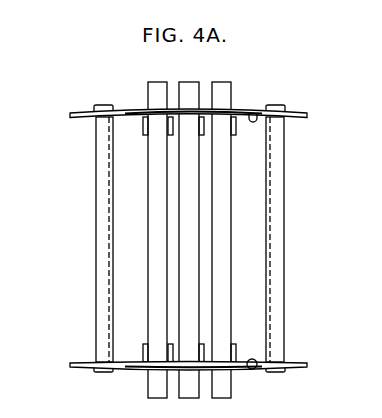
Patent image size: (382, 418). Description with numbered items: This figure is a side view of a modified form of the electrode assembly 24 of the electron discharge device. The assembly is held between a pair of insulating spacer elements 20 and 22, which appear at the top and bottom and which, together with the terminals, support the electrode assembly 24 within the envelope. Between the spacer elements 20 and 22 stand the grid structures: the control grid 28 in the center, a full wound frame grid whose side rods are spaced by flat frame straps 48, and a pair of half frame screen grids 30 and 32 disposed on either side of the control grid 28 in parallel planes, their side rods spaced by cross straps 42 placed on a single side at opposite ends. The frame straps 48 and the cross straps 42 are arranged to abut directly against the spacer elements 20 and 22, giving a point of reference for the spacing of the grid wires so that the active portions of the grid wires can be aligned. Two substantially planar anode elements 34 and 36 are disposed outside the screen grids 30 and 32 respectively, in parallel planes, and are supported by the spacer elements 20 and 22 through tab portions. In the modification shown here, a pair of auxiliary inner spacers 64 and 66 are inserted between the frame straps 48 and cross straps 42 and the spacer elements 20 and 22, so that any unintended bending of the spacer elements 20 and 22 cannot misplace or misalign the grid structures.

The insulating spacer element 20 is at (303, 112).
The insulating spacer element 22 is at (294, 365).
The electrode assembly 24 is at (79, 143).
The control grid 28 is at (200, 71).
The screen grid 30 is at (152, 82).
The screen grid 32 is at (246, 71).
The anode element 34 is at (96, 233).
The anode element 36 is at (285, 206).
The cross strap 42 is at (236, 135).
The frame strap 48 is at (170, 135).
The auxiliary inner spacer 64 is at (254, 110).
The auxiliary inner spacer 66 is at (255, 370).